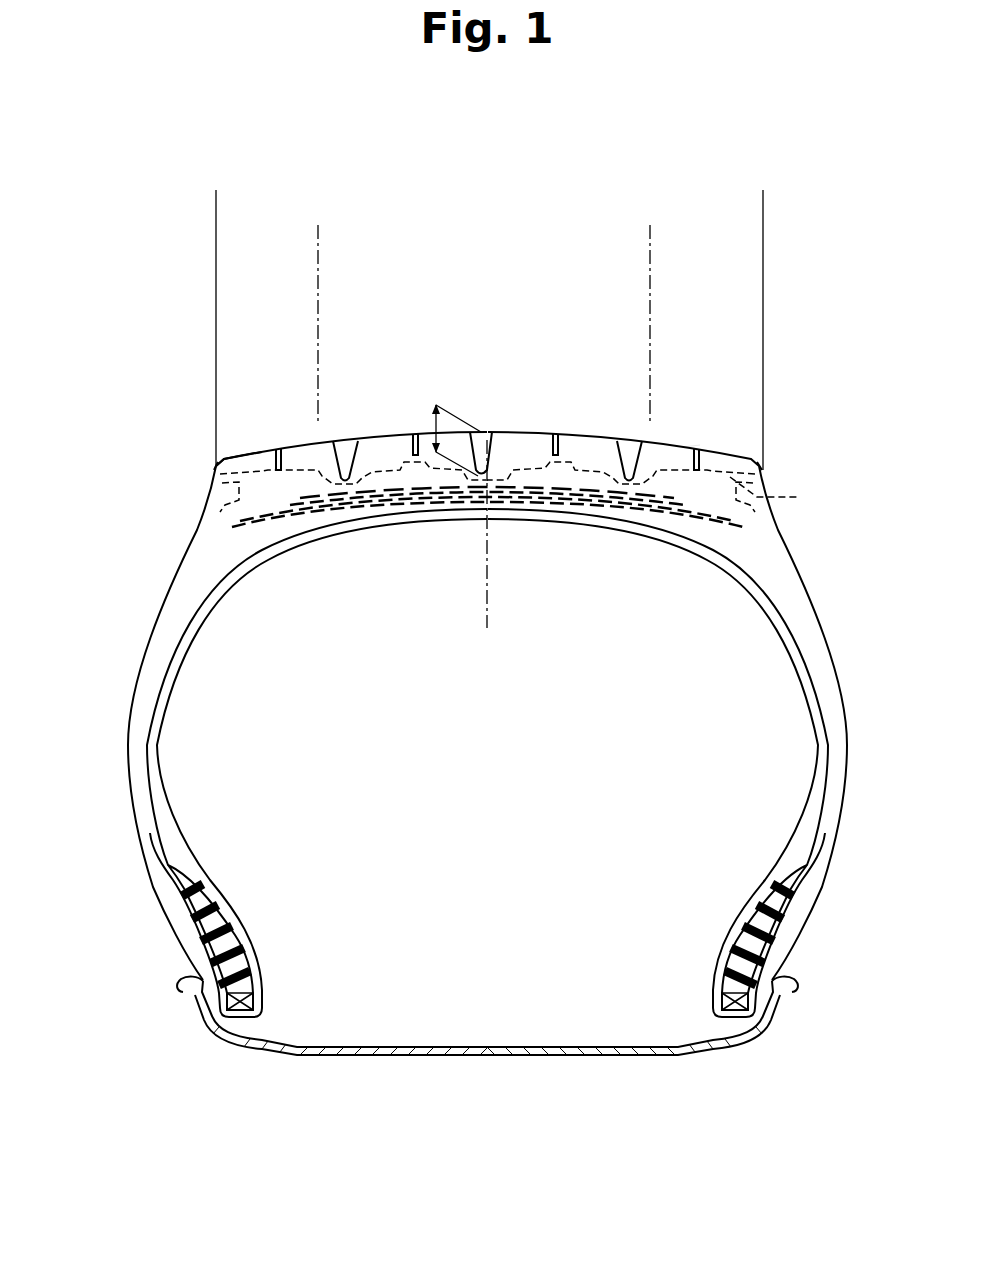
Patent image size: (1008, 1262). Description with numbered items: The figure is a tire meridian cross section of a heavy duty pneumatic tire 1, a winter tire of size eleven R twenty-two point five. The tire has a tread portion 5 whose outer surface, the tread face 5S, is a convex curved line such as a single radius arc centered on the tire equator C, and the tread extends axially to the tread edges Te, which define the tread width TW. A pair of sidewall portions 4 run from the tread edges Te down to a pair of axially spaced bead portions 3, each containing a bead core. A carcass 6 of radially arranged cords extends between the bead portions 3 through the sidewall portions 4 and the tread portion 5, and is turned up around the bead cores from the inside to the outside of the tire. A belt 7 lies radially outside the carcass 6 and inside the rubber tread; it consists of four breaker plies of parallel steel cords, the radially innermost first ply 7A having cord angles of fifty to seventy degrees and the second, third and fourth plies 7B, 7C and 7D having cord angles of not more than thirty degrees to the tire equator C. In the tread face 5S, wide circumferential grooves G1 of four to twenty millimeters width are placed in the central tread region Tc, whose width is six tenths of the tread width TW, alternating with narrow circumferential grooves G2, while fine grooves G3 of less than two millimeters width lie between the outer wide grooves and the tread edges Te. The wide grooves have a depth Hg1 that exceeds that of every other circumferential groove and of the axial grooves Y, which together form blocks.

The heavy duty pneumatic tire 1 is at (797, 420).
The bead portion 3 is at (272, 963).
The sidewall portion 4 is at (128, 742).
The tread portion 5 is at (242, 1008).
The tread face 5S is at (250, 452).
The carcass 6 is at (150, 763).
The belt 7 is at (561, 542).
The first ply 7A is at (740, 572).
The second ply 7B is at (745, 545).
The third ply 7C is at (722, 528).
The fourth ply 7D is at (570, 495).
The tire equator C is at (487, 598).
The tread edge Te is at (208, 472).
The tread width TW is at (763, 197).
The central tread region Tc is at (318, 282).
The wide circumferential groove G1 is at (345, 438).
The narrow circumferential groove G2 is at (415, 432).
The fine groove G3 is at (278, 447).
The groove depth Hg1 is at (436, 404).
The axial grooves Y is at (684, 430).